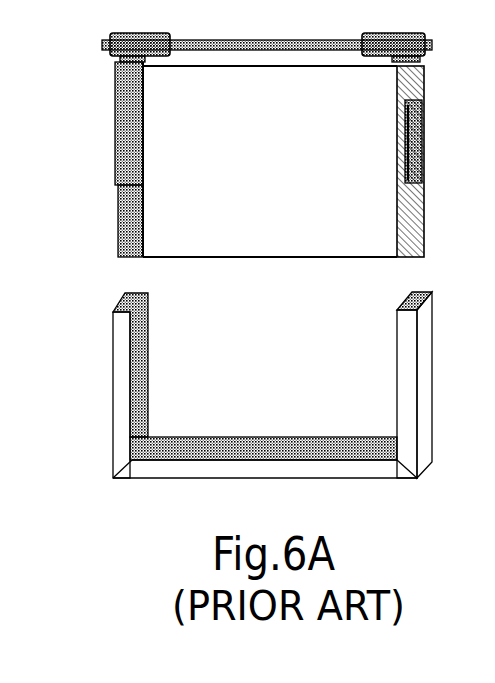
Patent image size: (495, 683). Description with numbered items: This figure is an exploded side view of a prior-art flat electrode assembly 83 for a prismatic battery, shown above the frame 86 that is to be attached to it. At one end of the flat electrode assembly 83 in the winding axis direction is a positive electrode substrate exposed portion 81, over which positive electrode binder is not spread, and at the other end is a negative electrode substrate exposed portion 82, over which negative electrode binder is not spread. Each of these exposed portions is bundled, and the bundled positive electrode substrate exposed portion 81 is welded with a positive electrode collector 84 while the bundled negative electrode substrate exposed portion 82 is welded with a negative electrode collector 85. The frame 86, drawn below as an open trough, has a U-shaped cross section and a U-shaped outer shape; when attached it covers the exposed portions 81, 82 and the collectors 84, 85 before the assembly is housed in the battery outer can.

The positive electrode substrate exposed portion 81 is at (118, 240).
The negative electrode substrate exposed portion 82 is at (411, 227).
The flat electrode assembly 83 is at (348, 187).
The positive electrode collector 84 is at (122, 135).
The negative electrode collector 85 is at (420, 137).
The frame 86 is at (277, 465).